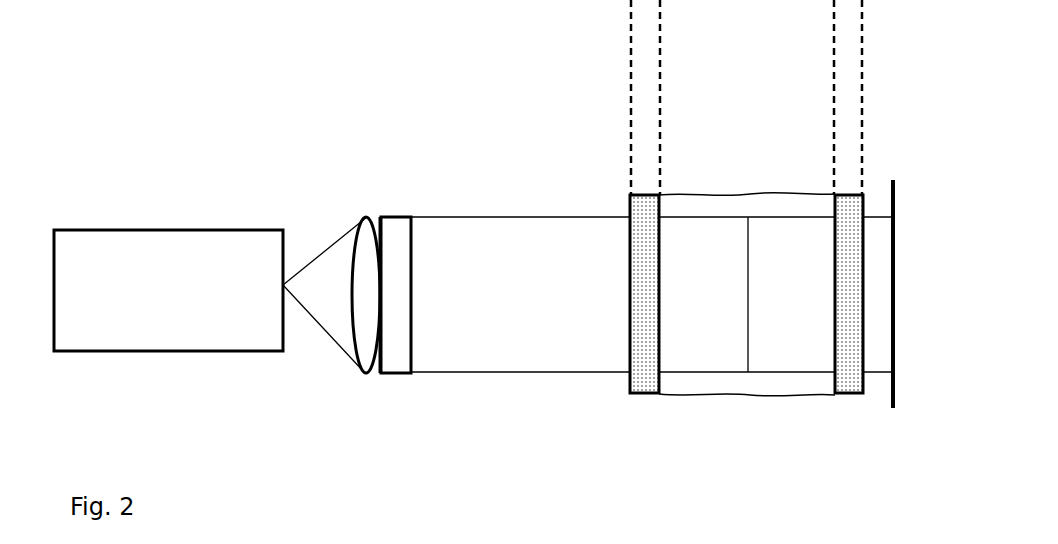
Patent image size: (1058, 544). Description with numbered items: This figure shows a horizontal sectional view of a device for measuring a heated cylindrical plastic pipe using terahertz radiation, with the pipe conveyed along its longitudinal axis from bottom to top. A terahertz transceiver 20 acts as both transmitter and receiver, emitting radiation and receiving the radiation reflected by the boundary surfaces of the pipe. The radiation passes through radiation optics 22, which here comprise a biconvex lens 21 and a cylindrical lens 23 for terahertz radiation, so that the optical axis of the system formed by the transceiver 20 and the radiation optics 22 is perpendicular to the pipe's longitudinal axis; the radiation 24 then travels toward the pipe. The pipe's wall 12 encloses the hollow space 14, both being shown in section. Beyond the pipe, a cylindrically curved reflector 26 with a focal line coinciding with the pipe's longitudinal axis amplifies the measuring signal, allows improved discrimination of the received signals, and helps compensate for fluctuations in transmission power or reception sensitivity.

The terahertz transceiver 20 is at (212, 263).
The biconvex lens 21 is at (363, 328).
The radiation optics 22 is at (378, 254).
The cylindrical lens 23 is at (400, 335).
The collimated beam 24 is at (530, 263).
The hollow space 14 is at (697, 348).
The wall 12 is at (850, 257).
The cylindrically curved reflector 26 is at (895, 248).